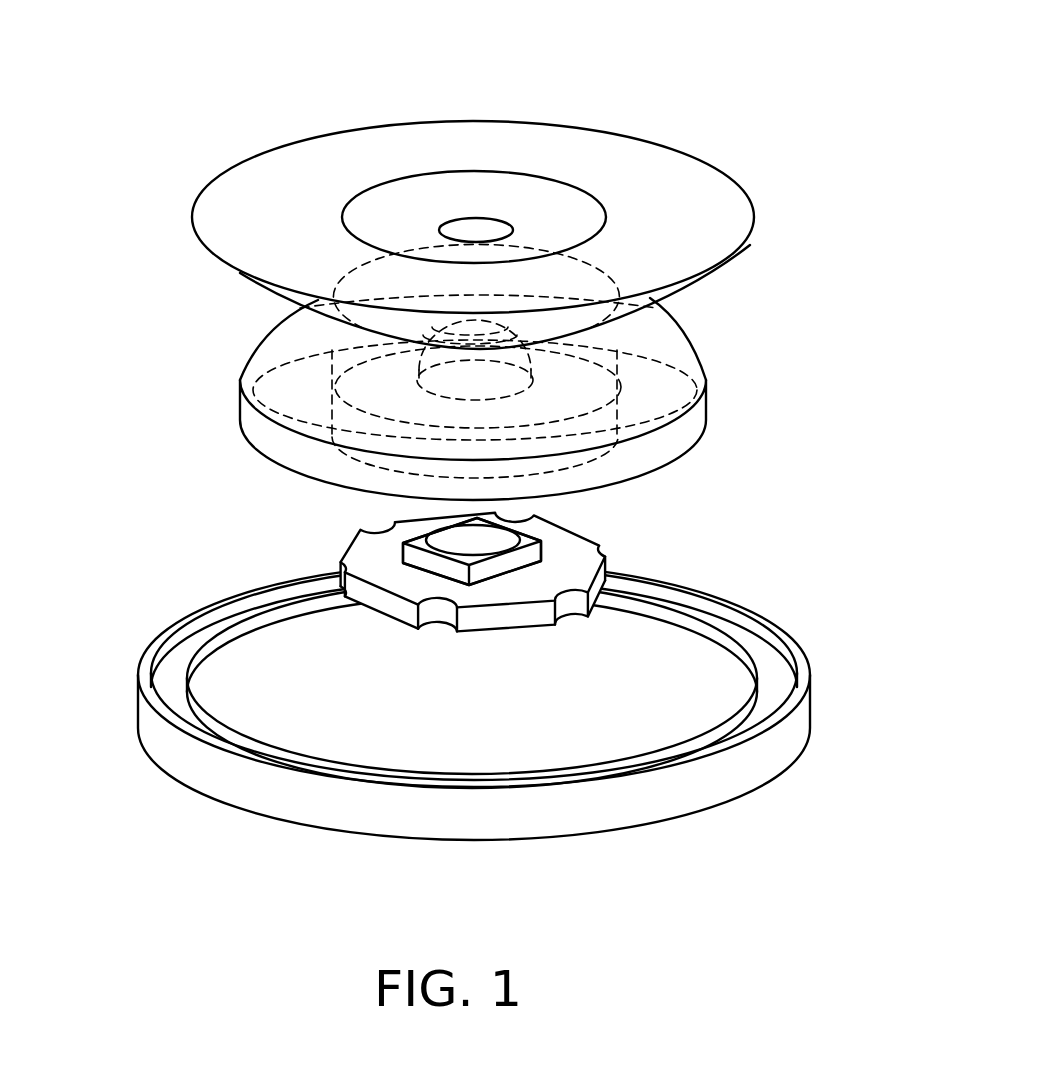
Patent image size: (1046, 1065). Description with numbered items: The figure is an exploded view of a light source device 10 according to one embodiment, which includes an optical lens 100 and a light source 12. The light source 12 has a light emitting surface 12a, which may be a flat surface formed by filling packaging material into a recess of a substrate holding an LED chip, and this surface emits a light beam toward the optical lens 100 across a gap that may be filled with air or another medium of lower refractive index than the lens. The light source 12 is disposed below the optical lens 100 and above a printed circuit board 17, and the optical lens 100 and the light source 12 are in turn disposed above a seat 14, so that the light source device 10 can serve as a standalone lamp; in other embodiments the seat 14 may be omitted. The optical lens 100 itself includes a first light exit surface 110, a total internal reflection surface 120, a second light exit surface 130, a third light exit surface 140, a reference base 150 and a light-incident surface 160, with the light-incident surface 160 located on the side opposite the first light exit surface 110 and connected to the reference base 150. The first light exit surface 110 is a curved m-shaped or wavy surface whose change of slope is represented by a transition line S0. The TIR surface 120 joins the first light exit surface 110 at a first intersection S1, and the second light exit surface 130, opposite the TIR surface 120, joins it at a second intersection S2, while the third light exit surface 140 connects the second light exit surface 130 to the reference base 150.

The optical lens 100 is at (461, 449).
The first light exit surface 110 is at (540, 149).
The total internal reflection (TIR) surface 120 is at (525, 174).
The second light exit surface 130 is at (667, 298).
The third light exit surface 140 is at (675, 352).
The reference base 150 is at (655, 410).
The light-incident surface 160 is at (480, 323).
The light source device 10 is at (440, 696).
The light source 12 is at (442, 540).
The light emitting surface 12a is at (457, 542).
The printed circuit board (PCB) 17 is at (578, 572).
The seat 14 is at (145, 715).
The transition line S0 is at (452, 210).
The first intersection S1 is at (520, 159).
The second intersection S2 is at (767, 234).